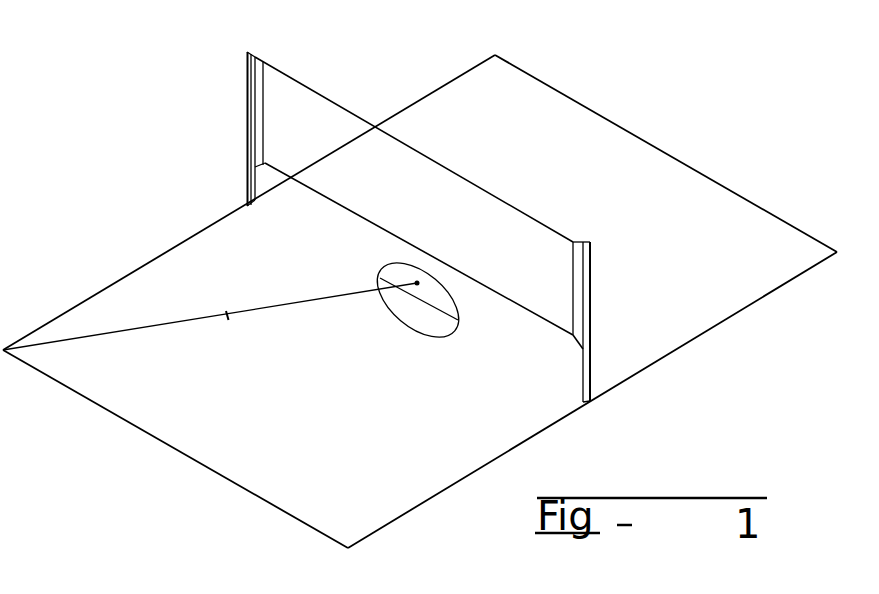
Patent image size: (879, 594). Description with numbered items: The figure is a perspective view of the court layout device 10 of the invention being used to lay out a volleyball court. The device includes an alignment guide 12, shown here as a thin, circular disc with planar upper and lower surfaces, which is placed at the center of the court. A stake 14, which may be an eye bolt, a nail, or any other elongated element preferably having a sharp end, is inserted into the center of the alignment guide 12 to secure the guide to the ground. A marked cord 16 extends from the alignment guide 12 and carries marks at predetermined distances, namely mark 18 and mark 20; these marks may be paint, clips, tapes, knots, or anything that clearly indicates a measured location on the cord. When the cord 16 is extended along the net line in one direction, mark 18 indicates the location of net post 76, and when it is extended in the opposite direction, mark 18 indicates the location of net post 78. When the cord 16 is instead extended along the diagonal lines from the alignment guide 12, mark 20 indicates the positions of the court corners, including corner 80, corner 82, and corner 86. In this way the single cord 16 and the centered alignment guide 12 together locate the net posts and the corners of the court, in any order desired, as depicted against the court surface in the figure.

The table tennis training apparatus 10 is at (420, 274).
The alignment guide 12 is at (408, 333).
The stake 14 is at (419, 290).
The marked cord 16 is at (310, 302).
The mark 18 is at (229, 318).
The mark 20 is at (5, 352).
The net post 76 is at (590, 335).
The net post 78 is at (247, 73).
The corner 80 is at (495, 55).
The corner 82 is at (837, 252).
The corner 86 is at (3, 350).